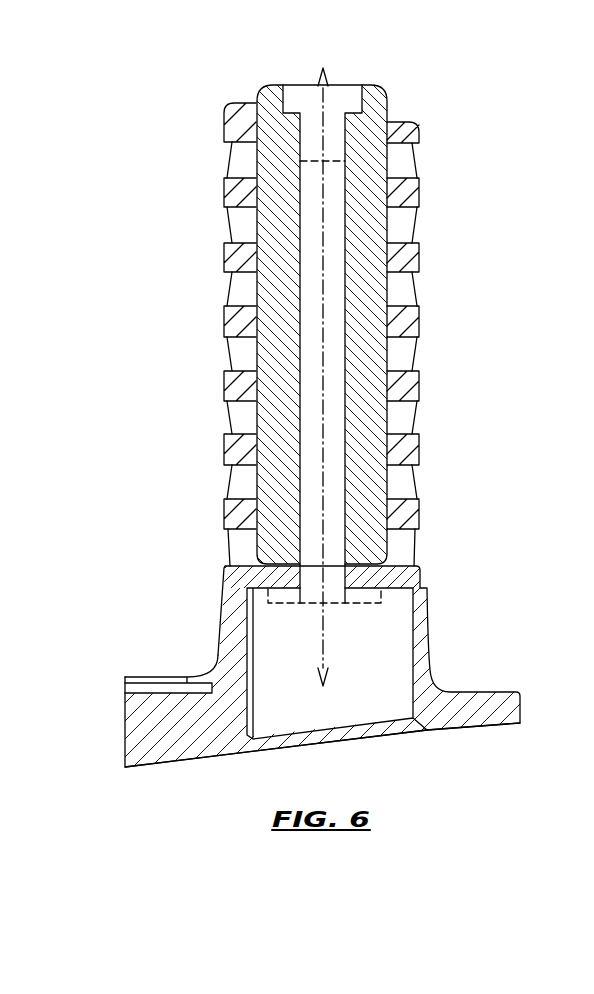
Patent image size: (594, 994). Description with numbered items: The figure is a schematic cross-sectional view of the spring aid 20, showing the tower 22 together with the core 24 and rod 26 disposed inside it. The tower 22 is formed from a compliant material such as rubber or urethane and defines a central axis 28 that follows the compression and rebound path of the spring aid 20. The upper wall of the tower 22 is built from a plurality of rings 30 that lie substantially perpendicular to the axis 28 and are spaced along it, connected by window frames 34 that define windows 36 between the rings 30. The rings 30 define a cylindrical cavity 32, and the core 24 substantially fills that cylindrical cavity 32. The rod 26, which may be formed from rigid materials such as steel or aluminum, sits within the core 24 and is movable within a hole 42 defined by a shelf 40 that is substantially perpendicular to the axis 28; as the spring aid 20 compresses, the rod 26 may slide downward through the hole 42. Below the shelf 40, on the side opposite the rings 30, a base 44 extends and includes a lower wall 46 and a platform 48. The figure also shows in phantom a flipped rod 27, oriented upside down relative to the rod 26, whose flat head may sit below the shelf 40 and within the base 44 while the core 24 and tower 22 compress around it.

The spring aid 20 is at (128, 89).
The tower 22 is at (174, 296).
The core 24 is at (258, 229).
The rod 26 is at (300, 94).
The flipped rod 27 is at (334, 159).
The axis 28 is at (321, 643).
The rings 30 is at (223, 517).
The cylindrical cavity 32 is at (388, 246).
The window frames 34 is at (240, 348).
The windows 36 is at (238, 430).
The shelf 40 is at (232, 578).
The hole 42 is at (342, 578).
The base 44 is at (511, 768).
The lower wall 46 is at (217, 665).
The platform 48 is at (467, 703).